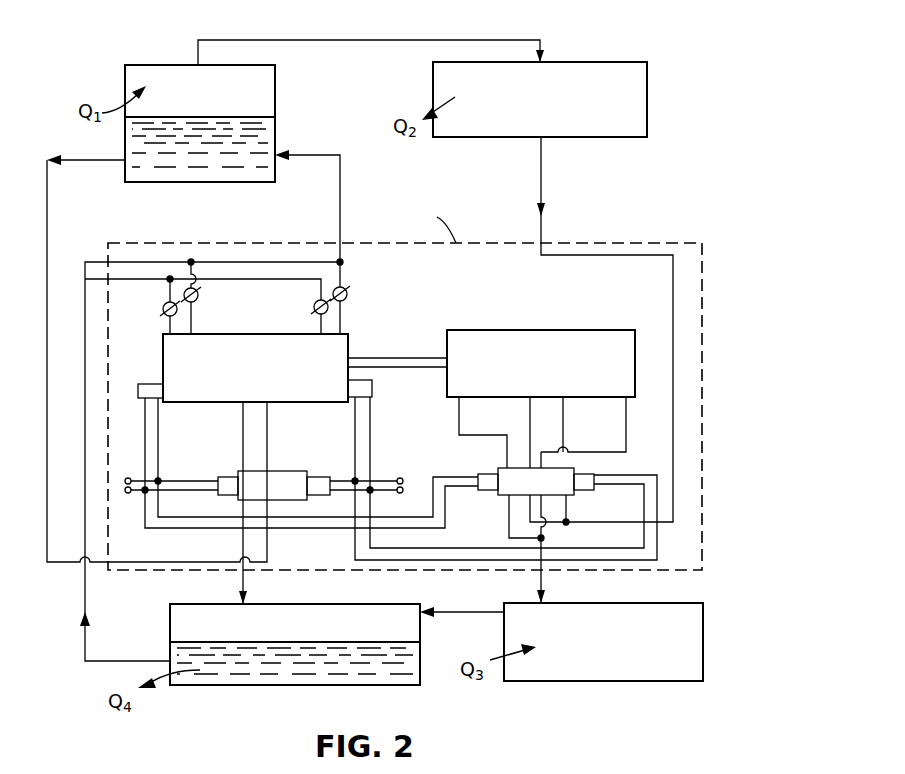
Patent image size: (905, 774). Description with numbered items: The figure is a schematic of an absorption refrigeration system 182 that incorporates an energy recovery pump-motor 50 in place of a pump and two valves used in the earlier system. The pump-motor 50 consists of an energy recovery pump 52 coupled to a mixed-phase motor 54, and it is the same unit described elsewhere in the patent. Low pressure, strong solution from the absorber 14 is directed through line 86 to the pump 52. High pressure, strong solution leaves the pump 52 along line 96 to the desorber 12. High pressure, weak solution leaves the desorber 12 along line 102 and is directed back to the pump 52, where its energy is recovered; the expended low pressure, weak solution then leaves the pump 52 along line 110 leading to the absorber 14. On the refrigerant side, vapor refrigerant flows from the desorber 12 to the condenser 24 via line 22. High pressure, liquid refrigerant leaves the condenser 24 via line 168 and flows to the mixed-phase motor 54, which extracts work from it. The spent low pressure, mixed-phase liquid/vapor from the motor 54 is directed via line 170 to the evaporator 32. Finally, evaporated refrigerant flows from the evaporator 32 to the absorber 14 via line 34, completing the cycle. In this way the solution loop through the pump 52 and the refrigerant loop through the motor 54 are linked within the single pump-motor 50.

The desorber 12 is at (125, 65).
The line 22 is at (237, 40).
The condenser 24 is at (696, 33).
The system 182 is at (83, 150).
The line 96 is at (338, 232).
The line 168 is at (629, 198).
The energy recovery pump-motor 50 is at (529, 208).
The energy recovery pump 52 is at (286, 298).
The mixed-phase motor 54 is at (581, 293).
The line 110 is at (324, 578).
The line 170 is at (604, 578).
The line 34 is at (483, 610).
The line 102 is at (53, 563).
The line 86 is at (148, 595).
The absorber 14 is at (258, 687).
The evaporator 32 is at (646, 698).